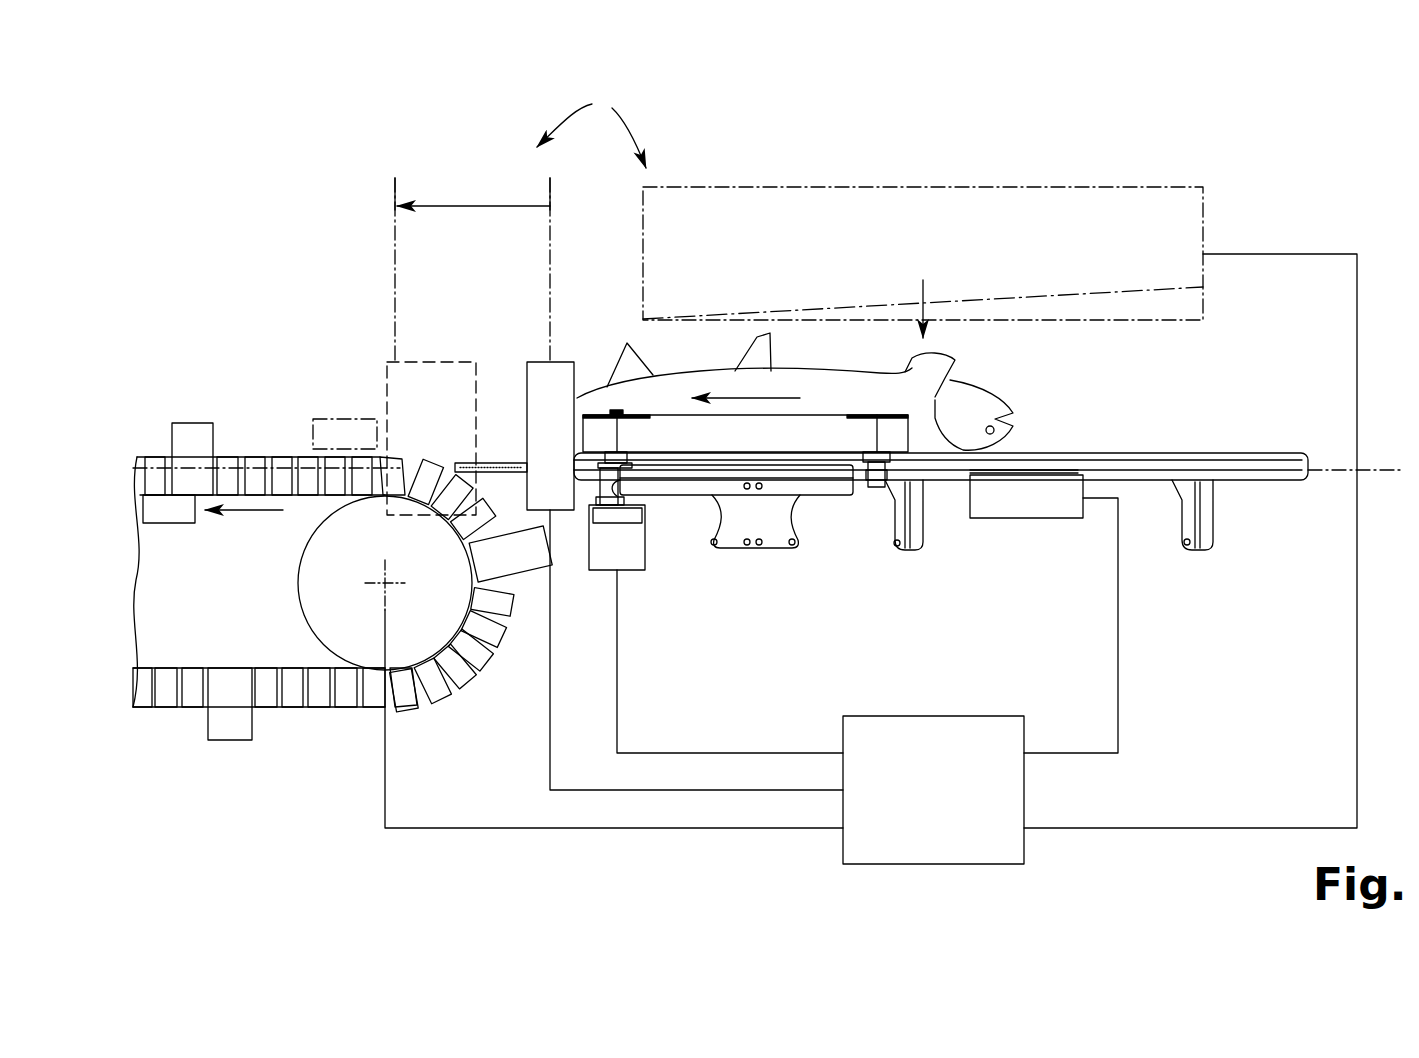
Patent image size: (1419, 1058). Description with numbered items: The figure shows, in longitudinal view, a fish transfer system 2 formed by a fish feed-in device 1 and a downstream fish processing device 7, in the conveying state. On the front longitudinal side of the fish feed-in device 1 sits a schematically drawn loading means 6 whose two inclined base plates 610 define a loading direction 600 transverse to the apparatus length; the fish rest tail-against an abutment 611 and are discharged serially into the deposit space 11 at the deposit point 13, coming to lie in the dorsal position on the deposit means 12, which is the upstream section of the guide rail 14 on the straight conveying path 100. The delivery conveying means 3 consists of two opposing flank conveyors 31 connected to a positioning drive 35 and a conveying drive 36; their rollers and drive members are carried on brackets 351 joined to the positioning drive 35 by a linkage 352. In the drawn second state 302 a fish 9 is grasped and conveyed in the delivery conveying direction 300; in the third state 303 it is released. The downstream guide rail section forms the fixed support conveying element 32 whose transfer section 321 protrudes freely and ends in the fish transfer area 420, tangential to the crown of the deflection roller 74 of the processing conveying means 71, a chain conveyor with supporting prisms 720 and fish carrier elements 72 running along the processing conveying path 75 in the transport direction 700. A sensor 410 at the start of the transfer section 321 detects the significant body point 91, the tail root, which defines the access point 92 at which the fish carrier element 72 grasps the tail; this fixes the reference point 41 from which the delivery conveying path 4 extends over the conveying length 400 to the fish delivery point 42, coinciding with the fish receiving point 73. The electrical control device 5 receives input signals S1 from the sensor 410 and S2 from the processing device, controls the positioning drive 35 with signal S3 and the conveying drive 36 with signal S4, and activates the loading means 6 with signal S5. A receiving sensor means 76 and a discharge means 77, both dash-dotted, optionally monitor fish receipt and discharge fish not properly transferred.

The fish feed-in device 1 is at (1082, 417).
The fish transfer system 2 is at (591, 126).
The delivery conveying means 3 is at (838, 508).
The delivery conveying path 4 is at (485, 358).
The electrical control device 5 is at (925, 803).
The loading means 6 is at (922, 187).
The fish processing device 7 is at (178, 754).
The fish 9 is at (966, 397).
The deposit space 11 is at (962, 350).
The deposit means 12 is at (1018, 452).
The deposit point 13 is at (1052, 446).
The guide rail 14 is at (503, 473).
The flank conveyor 31 is at (675, 440).
The support conveying element 32 is at (580, 506).
The positioning drive 35 is at (1027, 518).
The conveying drive 36 is at (645, 542).
The reference point 41 is at (550, 262).
The fish delivery point 42 is at (395, 233).
The processing conveying means 71 is at (193, 668).
The fish carrier element 72 is at (195, 423).
The fish receiving point 73 is at (395, 277).
The deflection roller 74 is at (298, 602).
The processing conveying path 75 is at (152, 457).
The receiving sensor means 76 is at (313, 432).
The discharge means 77 is at (170, 523).
The significant body point 91 is at (587, 393).
The access point 92 is at (490, 463).
The conveying path 100 is at (255, 468).
The delivery conveying direction 300 is at (785, 393).
The second state 302 is at (142, 299).
The third state 303 is at (322, 253).
The transfer section 321 is at (460, 470).
The bracket 351 is at (790, 496).
The linkage 352 is at (950, 485).
The conveying length 400 is at (470, 205).
The sensor 410 is at (553, 362).
The fish transfer area 420 is at (387, 378).
The loading direction 600 is at (925, 290).
The base plate 610 is at (790, 312).
The abutment 611 is at (643, 253).
The transport direction 700 is at (245, 512).
The supporting prism 720 is at (345, 707).
The control signal S1 is at (696, 650).
The control signal S2 is at (614, 719).
The control signal S3 is at (1071, 625).
The control signal S4 is at (730, 661).
The control signal S5 is at (1190, 541).